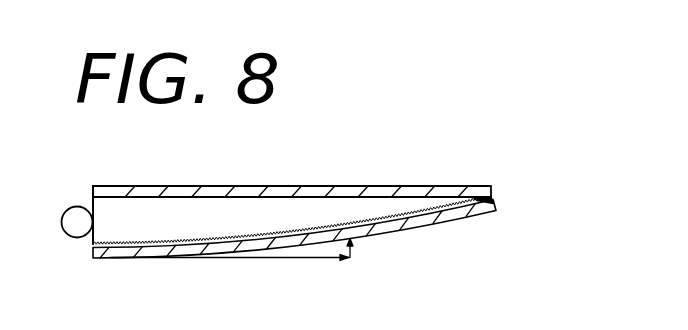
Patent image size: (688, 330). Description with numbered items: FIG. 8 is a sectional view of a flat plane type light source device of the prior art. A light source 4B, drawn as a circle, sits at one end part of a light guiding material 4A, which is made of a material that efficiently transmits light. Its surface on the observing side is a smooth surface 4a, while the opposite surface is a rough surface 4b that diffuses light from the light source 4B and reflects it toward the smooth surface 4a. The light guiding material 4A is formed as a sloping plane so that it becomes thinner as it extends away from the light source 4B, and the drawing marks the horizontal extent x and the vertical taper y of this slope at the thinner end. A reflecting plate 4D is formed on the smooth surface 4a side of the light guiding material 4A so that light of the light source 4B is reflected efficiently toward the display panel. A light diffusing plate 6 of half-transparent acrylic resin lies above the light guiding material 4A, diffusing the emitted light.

The light diffusing plate 6 is at (212, 190).
The smooth surface 4a is at (292, 162).
The light guiding material 4A is at (306, 256).
The rough surface 4b is at (383, 222).
The light source 4B is at (61, 228).
The reflecting plate 4D is at (467, 212).
The horizontal distance x is at (229, 276).
The vertical deflection y is at (360, 254).